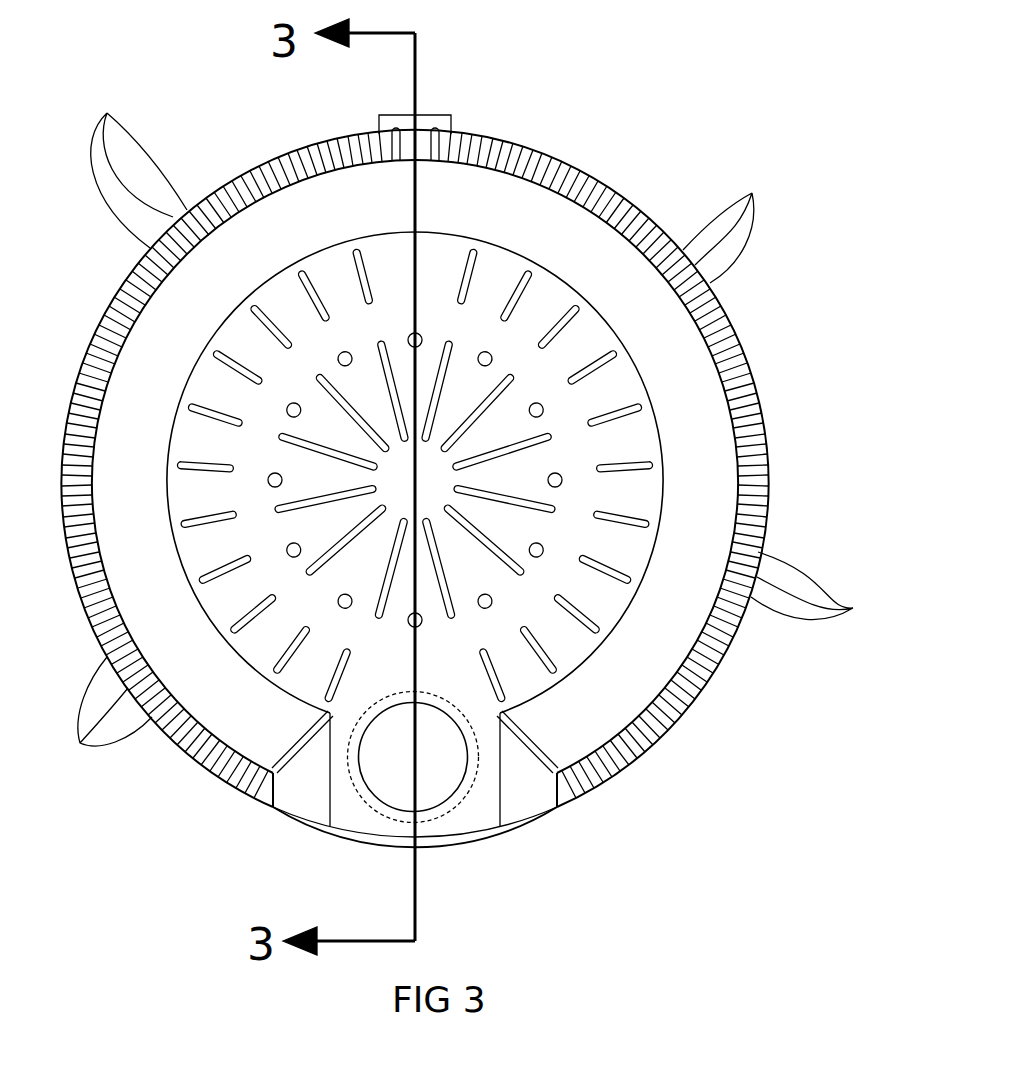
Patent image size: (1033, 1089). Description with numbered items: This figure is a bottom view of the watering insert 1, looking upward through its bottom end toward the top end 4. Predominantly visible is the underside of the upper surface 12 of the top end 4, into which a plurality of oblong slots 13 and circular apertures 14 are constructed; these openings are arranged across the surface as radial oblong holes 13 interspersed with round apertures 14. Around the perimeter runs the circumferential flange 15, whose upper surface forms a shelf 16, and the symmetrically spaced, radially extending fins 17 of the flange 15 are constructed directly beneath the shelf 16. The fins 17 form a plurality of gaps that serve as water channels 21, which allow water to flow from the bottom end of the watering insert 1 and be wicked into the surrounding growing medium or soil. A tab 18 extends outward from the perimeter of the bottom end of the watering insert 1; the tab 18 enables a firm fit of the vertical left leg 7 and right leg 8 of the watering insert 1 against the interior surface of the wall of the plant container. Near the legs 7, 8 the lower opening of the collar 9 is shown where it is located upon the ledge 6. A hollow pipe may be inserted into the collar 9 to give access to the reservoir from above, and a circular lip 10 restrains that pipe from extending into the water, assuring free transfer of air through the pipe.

The watering insert 1 is at (259, 148).
The top end 4 is at (558, 470).
The ledge 6 is at (357, 812).
The left leg 7 is at (310, 778).
The right leg 8 is at (513, 788).
The collar 9 is at (446, 808).
The circular lip 10 is at (427, 820).
The upper surface 12 is at (662, 338).
The oblong slots 13 is at (530, 268).
The apertures 14 is at (490, 352).
The circumferential flange 15 is at (480, 469).
The shelf 16 is at (740, 372).
The fins 17 is at (107, 113).
The tab 18 is at (452, 122).
The water channels 21 is at (752, 193).